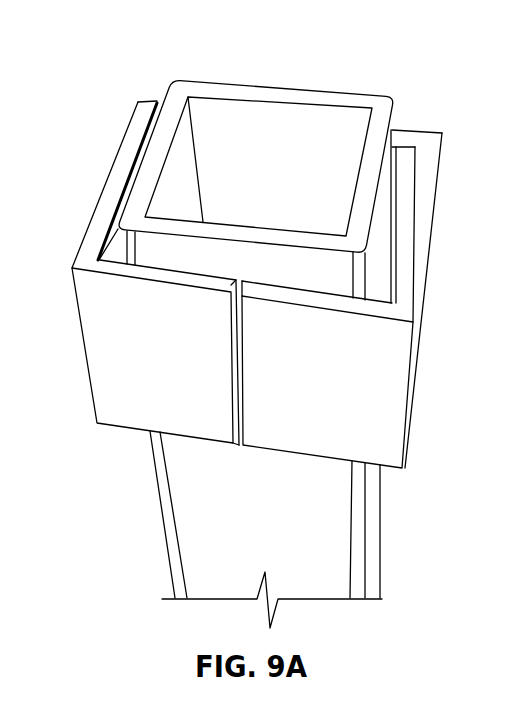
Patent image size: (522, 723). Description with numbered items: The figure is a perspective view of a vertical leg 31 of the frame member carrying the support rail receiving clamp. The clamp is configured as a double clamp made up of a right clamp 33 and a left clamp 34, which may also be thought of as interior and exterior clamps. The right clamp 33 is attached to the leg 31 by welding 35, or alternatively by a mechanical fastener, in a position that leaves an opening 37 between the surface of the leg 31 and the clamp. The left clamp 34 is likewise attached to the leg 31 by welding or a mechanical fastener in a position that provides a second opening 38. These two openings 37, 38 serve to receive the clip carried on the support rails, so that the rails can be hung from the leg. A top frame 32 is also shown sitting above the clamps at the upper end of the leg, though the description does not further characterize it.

The leg 31 is at (193, 522).
The top frame 32 is at (257, 92).
The right clamp 33 is at (385, 402).
The left clamp 34 is at (105, 353).
The welding 35 is at (273, 293).
The opening 37 is at (408, 135).
The opening 38 is at (109, 230).